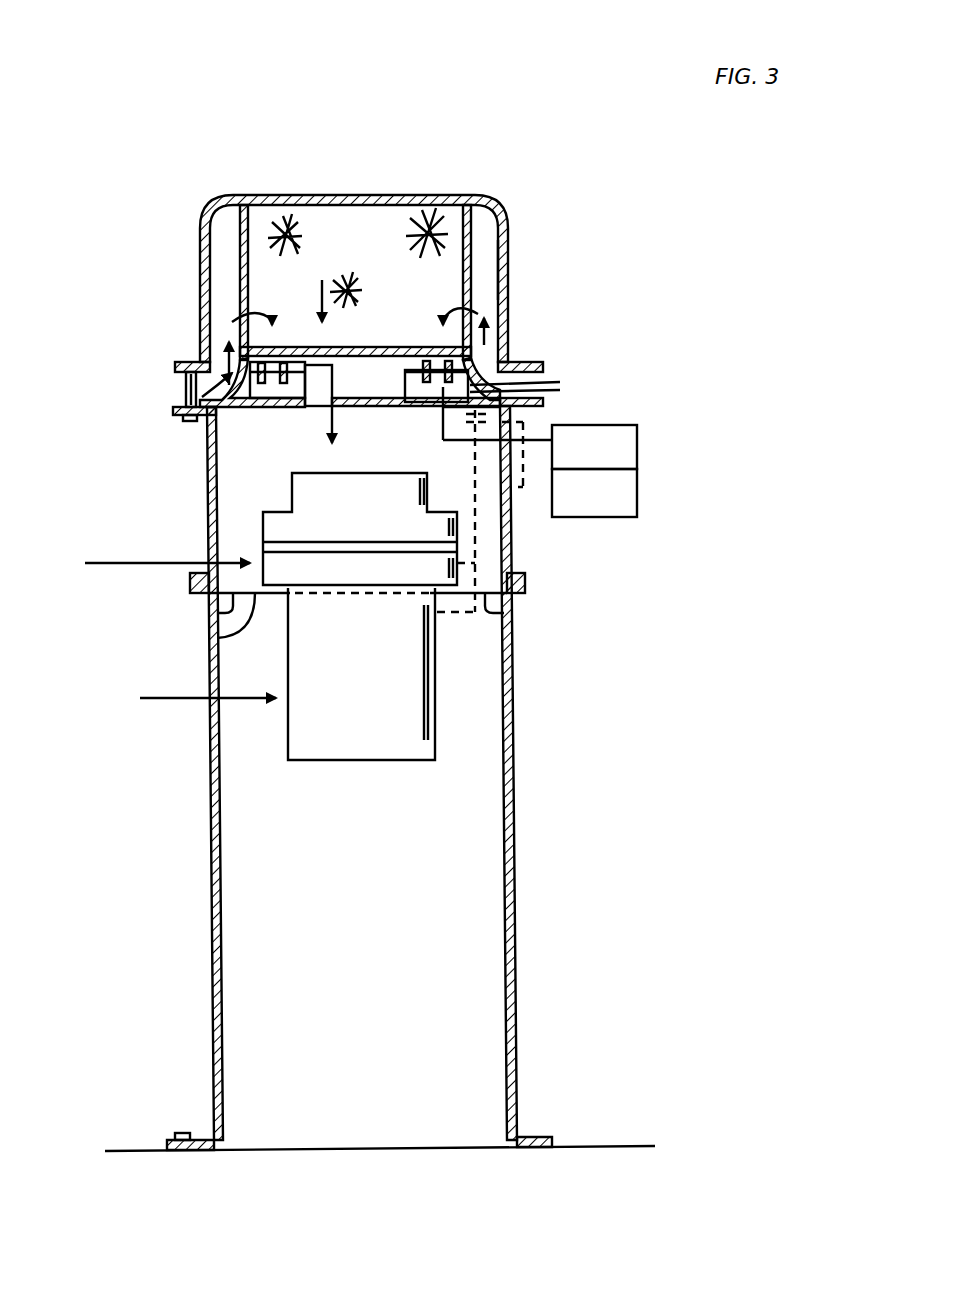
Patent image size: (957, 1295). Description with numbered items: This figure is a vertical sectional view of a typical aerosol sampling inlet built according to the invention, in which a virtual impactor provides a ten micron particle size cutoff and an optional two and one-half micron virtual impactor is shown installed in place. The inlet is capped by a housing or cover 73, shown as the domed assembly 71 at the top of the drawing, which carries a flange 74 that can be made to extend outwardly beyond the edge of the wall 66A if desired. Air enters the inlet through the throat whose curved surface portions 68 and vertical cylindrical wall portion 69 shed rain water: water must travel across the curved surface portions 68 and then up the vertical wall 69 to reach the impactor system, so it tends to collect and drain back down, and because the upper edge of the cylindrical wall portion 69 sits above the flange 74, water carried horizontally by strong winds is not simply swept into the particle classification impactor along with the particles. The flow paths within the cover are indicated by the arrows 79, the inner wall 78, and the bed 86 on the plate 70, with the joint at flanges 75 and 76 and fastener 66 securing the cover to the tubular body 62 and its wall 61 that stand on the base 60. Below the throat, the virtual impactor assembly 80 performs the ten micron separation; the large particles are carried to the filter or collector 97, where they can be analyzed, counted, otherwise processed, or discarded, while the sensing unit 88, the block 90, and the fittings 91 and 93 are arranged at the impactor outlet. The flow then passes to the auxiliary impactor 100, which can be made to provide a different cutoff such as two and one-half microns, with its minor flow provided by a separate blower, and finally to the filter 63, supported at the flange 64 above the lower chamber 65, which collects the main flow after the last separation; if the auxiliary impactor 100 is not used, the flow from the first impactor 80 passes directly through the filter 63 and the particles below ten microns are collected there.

The base of housing 60 is at (533, 645).
The right wall of tubular housing 61 is at (515, 852).
The tubular housing 62 is at (207, 500).
The filter 63 is at (146, 565).
The flange of housing 64 is at (217, 638).
The lower chamber / blower unit 65 is at (350, 762).
The bolt 66 is at (208, 368).
The wall 66A is at (540, 398).
The curved surface portion of inlet throat 68 is at (512, 386).
The cylindrical wall portion of inlet throat 69 is at (478, 352).
The support plate 70 is at (345, 346).
The cap 71 is at (492, 186).
The housing or cover 73 is at (500, 252).
The flange 74 is at (175, 368).
The flange 75 is at (160, 389).
The lower flange 76 is at (185, 396).
The inner wall 78 is at (240, 264).
The air flow arrows 79 is at (287, 287).
The virtual impactor assembly 80 is at (322, 280).
The desiccant particles 86 is at (350, 288).
The sensor 88 is at (620, 512).
The valve block 90 is at (387, 360).
The left fastener 91 is at (268, 393).
The right fastener 93 is at (385, 398).
The filter or collector 97 is at (620, 450).
The auxiliary impactor 100 is at (290, 497).